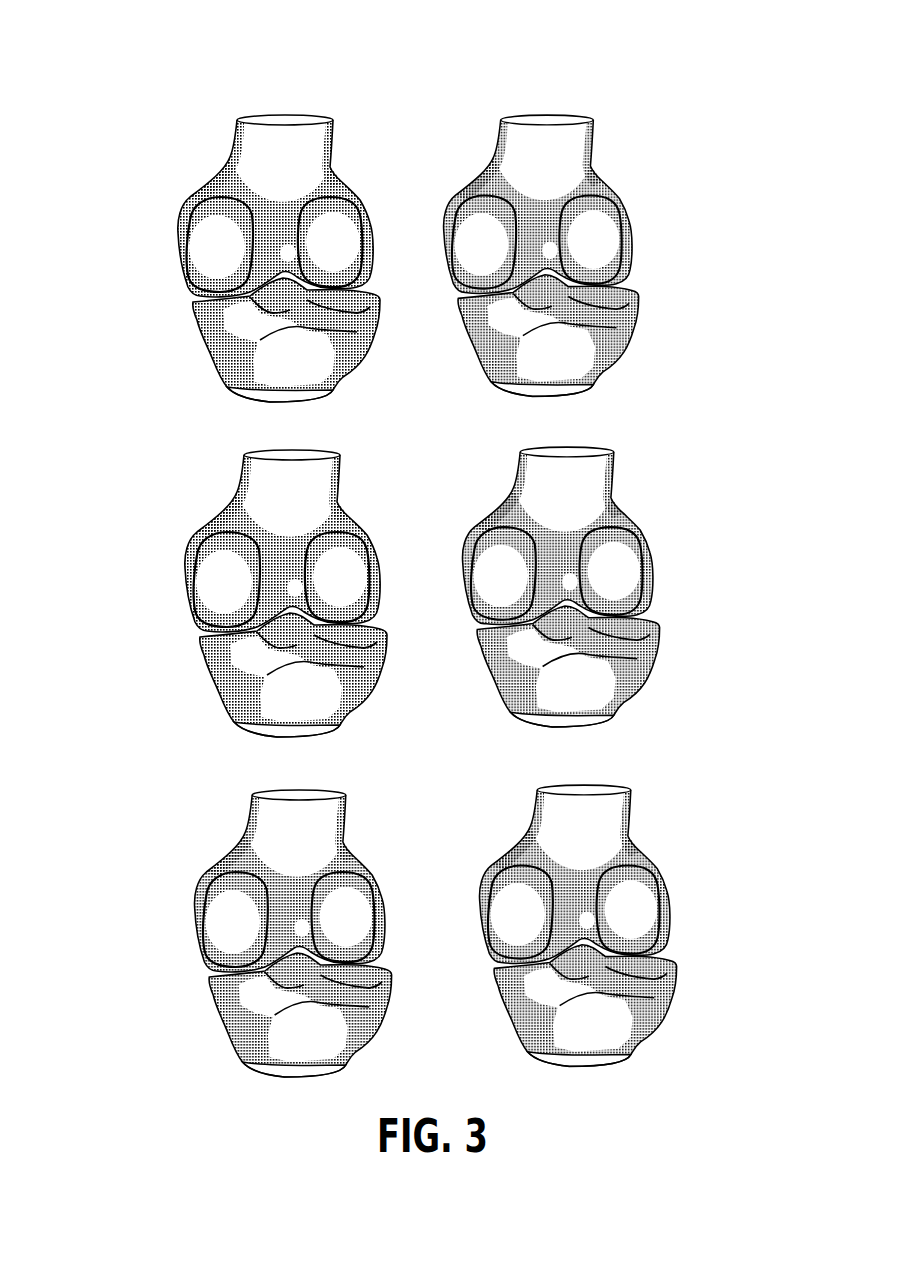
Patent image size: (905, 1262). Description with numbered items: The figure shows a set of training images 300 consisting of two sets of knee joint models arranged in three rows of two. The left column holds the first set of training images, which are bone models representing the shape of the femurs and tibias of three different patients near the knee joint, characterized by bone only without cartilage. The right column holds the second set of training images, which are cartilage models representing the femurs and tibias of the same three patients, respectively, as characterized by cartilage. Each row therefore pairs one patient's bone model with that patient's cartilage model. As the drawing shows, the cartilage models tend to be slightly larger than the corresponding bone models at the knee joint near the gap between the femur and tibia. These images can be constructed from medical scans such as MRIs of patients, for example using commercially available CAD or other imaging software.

The set of knee joint images 300 is at (390, 55).